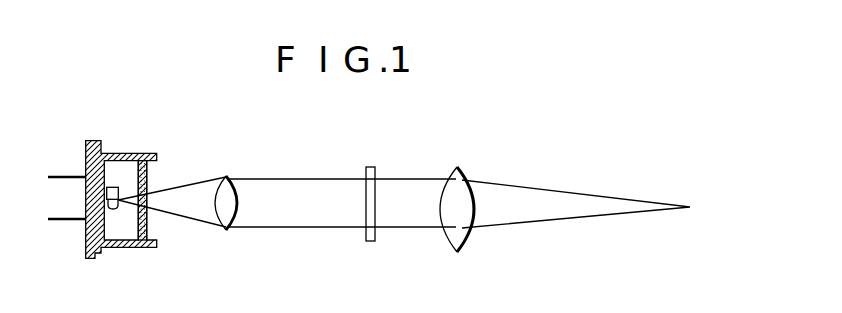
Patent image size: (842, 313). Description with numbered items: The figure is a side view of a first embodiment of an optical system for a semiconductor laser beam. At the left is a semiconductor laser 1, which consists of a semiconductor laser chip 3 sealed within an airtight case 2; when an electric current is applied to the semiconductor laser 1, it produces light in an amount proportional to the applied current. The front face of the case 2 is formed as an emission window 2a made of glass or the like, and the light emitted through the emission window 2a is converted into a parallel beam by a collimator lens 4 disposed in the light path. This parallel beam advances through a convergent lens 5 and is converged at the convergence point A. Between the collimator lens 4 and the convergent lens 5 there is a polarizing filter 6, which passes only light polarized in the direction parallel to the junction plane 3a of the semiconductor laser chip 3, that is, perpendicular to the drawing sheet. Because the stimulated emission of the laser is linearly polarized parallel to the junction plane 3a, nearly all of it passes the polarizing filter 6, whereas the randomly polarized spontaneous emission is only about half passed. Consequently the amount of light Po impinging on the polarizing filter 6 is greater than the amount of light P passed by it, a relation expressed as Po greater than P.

The semiconductor laser 1 is at (146, 143).
The airtight case 2 is at (114, 154).
The emission window 2a is at (148, 224).
The semiconductor laser chip 3 is at (112, 209).
The junction plane 3a is at (118, 209).
The collimator lens 4 is at (228, 177).
The convergent lens 5 is at (462, 180).
The polarizing filter 6 is at (369, 243).
The amount of light impinging on the polarizing filter Po is at (311, 182).
The amount of light passed by the polarizing filter P is at (402, 182).
The convergence point A is at (691, 208).